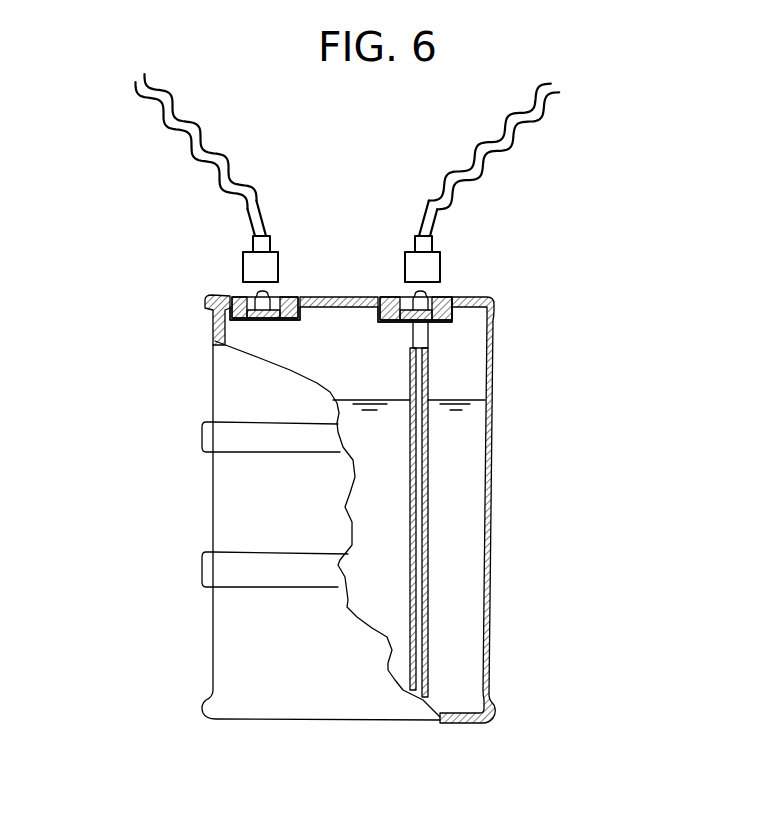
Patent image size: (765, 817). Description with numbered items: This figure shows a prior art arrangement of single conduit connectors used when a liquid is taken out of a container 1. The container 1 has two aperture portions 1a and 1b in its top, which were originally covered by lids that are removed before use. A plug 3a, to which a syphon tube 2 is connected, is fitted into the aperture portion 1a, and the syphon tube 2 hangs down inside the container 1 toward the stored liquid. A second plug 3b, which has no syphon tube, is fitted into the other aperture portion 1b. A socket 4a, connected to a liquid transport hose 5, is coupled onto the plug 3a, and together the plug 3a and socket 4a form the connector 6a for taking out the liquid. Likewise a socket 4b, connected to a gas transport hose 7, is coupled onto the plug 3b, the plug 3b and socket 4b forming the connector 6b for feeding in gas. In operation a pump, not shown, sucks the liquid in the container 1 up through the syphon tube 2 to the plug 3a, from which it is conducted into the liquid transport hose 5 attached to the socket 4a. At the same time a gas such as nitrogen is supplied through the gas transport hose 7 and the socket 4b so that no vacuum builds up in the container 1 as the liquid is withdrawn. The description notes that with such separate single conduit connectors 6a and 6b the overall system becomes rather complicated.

The container 1 is at (489, 477).
The aperture portion 1a is at (400, 323).
The aperture portion 1b is at (281, 324).
The syphon tube 2 is at (428, 582).
The plug 3a is at (448, 297).
The plug 3b is at (233, 313).
The socket 4a is at (440, 270).
The socket 4b is at (243, 272).
The liquid transport hose 5 is at (521, 129).
The connector 6a is at (540, 213).
The connector 6b is at (133, 243).
The gas transport hose 7 is at (200, 138).